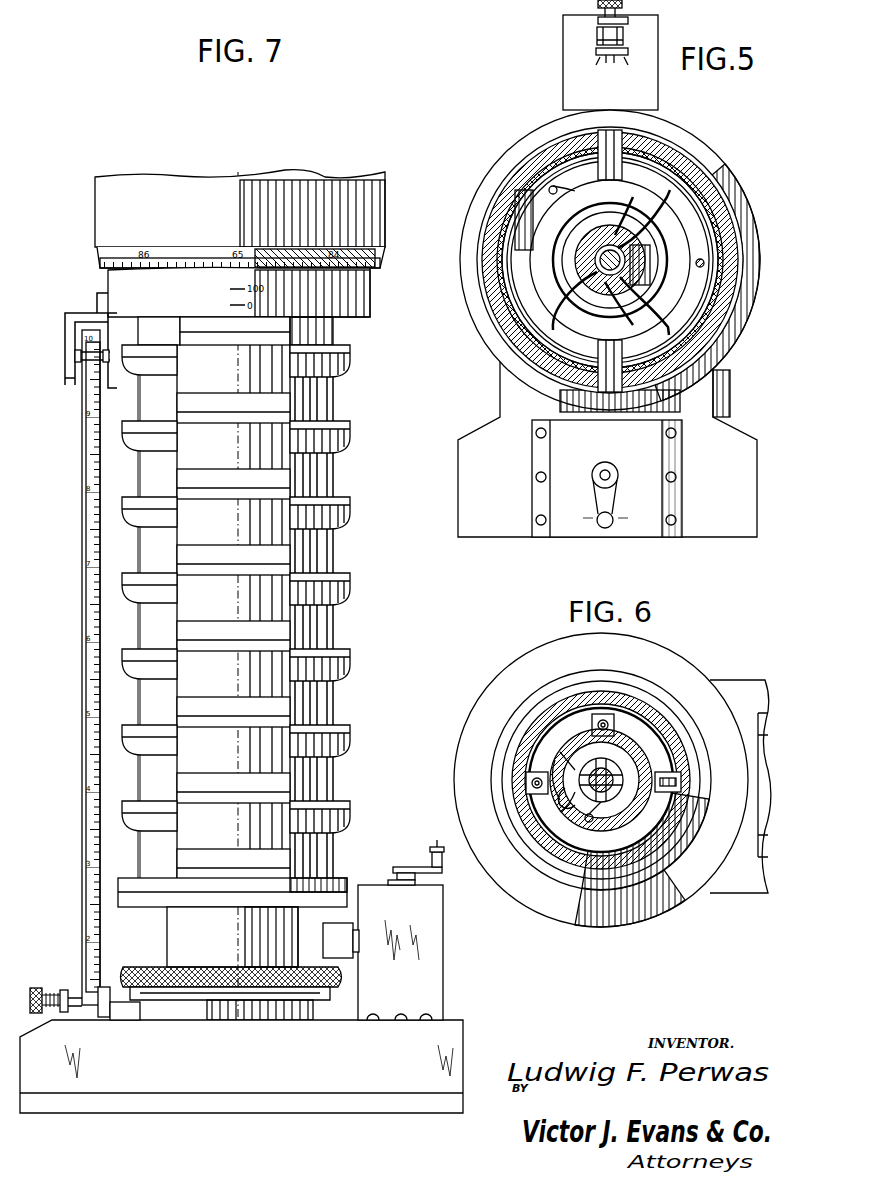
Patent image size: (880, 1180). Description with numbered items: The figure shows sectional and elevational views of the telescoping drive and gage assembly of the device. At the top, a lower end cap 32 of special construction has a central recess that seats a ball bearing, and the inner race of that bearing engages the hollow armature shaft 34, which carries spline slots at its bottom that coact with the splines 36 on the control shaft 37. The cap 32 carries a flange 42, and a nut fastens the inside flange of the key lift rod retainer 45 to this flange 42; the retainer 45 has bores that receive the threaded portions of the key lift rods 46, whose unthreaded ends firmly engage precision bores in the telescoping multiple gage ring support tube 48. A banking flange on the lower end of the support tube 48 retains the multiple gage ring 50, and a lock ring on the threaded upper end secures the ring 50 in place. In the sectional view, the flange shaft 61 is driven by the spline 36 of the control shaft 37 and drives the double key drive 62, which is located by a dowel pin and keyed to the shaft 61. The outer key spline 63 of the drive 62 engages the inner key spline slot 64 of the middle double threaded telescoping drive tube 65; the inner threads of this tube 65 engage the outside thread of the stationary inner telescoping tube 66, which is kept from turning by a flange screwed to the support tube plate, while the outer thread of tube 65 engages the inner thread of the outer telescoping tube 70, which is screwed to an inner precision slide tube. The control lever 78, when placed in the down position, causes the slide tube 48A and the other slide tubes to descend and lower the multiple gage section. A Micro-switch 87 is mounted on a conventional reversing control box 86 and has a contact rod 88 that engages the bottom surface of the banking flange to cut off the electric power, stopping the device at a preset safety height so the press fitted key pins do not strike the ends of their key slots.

In FIG. 5, the lower end cap 32 is at (644, 317).
In FIG. 5, the hollow armature shaft 34 is at (575, 314).
In FIG. 5, the splines 36 is at (617, 261).
In FIG. 5, the control shaft 37 is at (644, 211).
In FIG. 5, the flange 42 is at (572, 237).
In FIG. 5, the key lift rod retainer 45 is at (538, 263).
In FIG. 5, the key lift rods 46 is at (603, 362).
In FIG. 5, the telescoping multiple gage ring support tube 48 is at (540, 174).
In FIG. 5, the slide tube 48A is at (553, 158).
In FIG. 5, the multiple gage ring 50 is at (505, 185).
In FIG. 6, the flange shaft 61 is at (612, 772).
In FIG. 6, the double key drive 62 is at (597, 763).
In FIG. 6, the outer key spline 63 is at (574, 786).
In FIG. 6, the inner key spline slot 64 is at (578, 775).
In FIG. 6, the middle double threaded telescoping drive tube 65 is at (627, 775).
In FIG. 6, the stationary inner telescoping tube 66 is at (588, 822).
In FIG. 6, the outer telescoping tube 70 is at (563, 792).
In FIG. 7, the control lever 78 is at (436, 845).
In FIG. 5, the control lever 78 is at (604, 528).
In FIG. 7, the reversing control box 86 is at (455, 926).
In FIG. 5, the reversing control box 86 is at (650, 527).
In FIG. 7, the Micro-switch 87 is at (342, 930).
In FIG. 7, the contact rod 88 is at (357, 930).